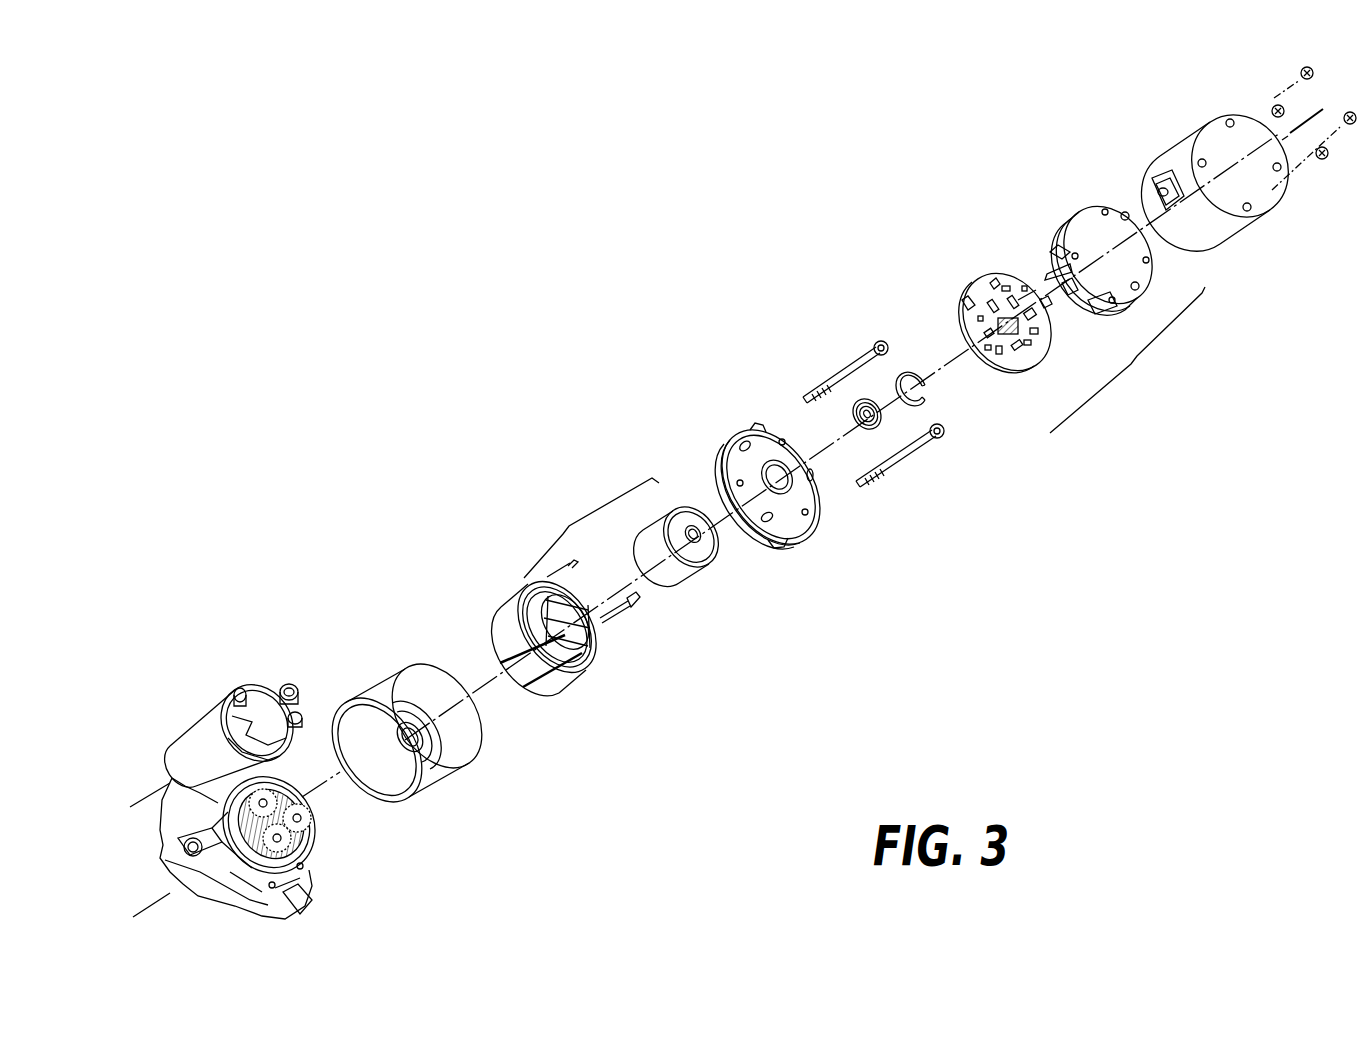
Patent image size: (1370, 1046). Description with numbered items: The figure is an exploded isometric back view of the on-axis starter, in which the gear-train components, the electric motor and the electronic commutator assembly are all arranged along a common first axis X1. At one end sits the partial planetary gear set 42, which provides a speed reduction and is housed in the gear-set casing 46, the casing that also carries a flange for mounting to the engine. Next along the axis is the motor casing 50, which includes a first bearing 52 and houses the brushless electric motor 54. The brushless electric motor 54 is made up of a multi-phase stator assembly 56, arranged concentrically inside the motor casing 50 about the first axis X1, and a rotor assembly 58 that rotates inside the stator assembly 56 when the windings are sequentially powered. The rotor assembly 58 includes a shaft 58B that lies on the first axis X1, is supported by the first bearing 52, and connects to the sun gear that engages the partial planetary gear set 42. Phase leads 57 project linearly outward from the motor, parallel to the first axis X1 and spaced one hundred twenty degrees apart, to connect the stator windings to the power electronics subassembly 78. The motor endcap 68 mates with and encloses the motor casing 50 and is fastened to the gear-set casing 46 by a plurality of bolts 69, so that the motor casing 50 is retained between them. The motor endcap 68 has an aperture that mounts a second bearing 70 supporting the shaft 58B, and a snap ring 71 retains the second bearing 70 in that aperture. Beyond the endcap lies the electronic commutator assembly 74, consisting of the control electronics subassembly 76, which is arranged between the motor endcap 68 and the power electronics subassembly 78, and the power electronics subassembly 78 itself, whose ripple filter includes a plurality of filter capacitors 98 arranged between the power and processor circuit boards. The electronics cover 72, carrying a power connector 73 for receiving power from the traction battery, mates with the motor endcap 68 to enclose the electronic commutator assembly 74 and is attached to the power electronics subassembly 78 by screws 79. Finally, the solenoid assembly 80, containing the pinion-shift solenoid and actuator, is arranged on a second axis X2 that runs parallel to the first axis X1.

The partial planetary gear set 42 is at (322, 842).
The gear-set casing 46 is at (302, 905).
The motor casing 50 is at (442, 783).
The first bearing 52 is at (406, 733).
The brushless electric motor 54 is at (568, 532).
The stator assembly 56 is at (497, 600).
The phase leads 57 is at (612, 618).
The rotor assembly 58 is at (688, 592).
The shaft 58B is at (702, 546).
The motor endcap 68 is at (812, 500).
The bolts 69 is at (843, 375).
The second bearing 70 is at (876, 434).
The snap ring 71 is at (916, 366).
The electronics cover 72 is at (1212, 120).
The power connector 73 is at (1160, 186).
The electronic commutator assembly 74 is at (1137, 360).
The control electronics subassembly 76 is at (1038, 378).
The power electronics subassembly 78 is at (1065, 210).
The screws 79 is at (1323, 158).
The solenoid assembly 80 is at (205, 706).
The filter capacitors 98 is at (1078, 304).
The first axis X1 is at (320, 792).
The second axis X2 is at (348, 660).